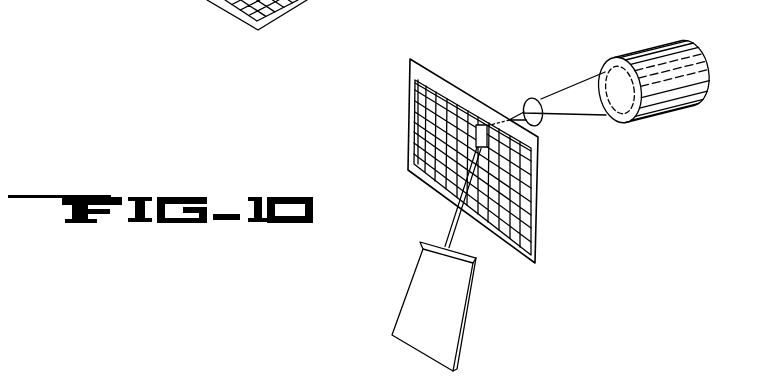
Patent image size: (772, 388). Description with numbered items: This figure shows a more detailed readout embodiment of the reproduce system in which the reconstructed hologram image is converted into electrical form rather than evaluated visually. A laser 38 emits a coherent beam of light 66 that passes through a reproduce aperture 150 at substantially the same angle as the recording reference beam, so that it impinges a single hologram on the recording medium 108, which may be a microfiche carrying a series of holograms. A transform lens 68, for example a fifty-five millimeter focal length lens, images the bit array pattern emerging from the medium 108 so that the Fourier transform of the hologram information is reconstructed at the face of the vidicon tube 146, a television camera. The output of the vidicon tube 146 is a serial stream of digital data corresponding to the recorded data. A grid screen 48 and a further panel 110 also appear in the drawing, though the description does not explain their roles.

The grid panel 110 is at (203, 0).
The recording medium 108 is at (533, 211).
The grid screen 48 is at (526, 152).
The reproduce aperture 150 is at (479, 125).
The coherent beam of light 66 is at (453, 217).
The laser 38 is at (408, 290).
The transform lens 68 is at (530, 100).
The vidicon tube 146 is at (636, 41).